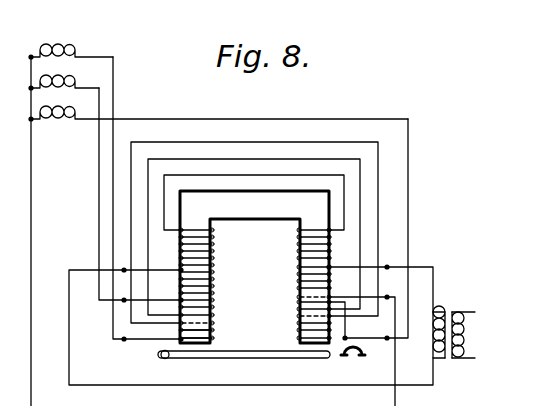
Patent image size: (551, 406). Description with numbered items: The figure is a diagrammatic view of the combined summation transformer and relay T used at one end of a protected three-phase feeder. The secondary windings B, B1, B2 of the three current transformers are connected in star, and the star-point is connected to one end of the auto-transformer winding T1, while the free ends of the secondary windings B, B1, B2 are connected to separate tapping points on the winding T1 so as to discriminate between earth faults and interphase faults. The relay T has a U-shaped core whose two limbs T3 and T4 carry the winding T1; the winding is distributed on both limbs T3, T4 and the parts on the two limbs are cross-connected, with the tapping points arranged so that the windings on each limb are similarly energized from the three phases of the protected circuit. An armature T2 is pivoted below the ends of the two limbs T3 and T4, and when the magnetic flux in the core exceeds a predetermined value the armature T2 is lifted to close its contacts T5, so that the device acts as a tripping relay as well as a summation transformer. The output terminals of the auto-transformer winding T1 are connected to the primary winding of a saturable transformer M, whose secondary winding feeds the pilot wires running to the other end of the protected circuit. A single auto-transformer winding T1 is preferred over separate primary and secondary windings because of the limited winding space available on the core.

The secondary winding of current transformer B is at (66, 44).
The secondary winding of current transformer B1 is at (60, 75).
The secondary winding of current transformer B2 is at (56, 119).
The combined auto-transformer and tripping relay T is at (254, 267).
The auto-transformer winding T1 is at (213, 271).
The armature T2 is at (227, 359).
The limb of the core T3 is at (195, 341).
The limb of the core T4 is at (315, 341).
The contacts T5 is at (355, 345).
The saturable transformer M is at (449, 326).